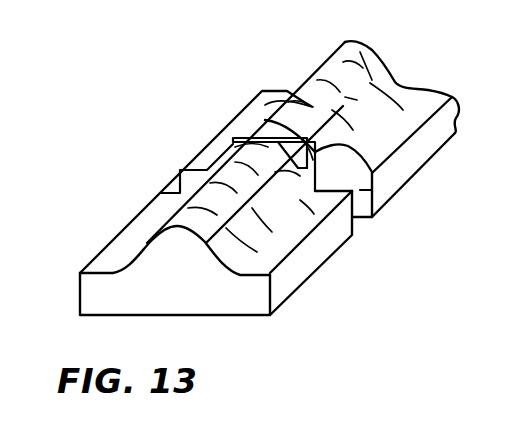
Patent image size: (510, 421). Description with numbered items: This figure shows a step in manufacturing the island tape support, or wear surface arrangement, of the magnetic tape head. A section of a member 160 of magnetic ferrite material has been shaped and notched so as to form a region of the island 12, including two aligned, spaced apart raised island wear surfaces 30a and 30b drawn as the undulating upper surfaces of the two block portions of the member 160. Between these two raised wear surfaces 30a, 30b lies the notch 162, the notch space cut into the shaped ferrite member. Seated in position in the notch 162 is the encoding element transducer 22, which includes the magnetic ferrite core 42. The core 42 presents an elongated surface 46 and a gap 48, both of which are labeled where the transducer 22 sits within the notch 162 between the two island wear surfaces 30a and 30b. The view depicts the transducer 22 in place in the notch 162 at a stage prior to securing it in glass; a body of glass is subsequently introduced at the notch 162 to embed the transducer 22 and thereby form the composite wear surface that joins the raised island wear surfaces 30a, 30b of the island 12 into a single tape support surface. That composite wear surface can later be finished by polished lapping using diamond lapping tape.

The island 12 is at (137, 242).
The encoding element transducer 22 is at (392, 154).
The raised island wear surface 30a is at (372, 46).
The raised island wear surface 30b is at (196, 221).
The core 42 is at (232, 144).
The elongated surface 46 is at (230, 122).
The gap 48 is at (266, 137).
The member of magnetic ferrite material 160 is at (360, 248).
The notch 162 is at (384, 203).